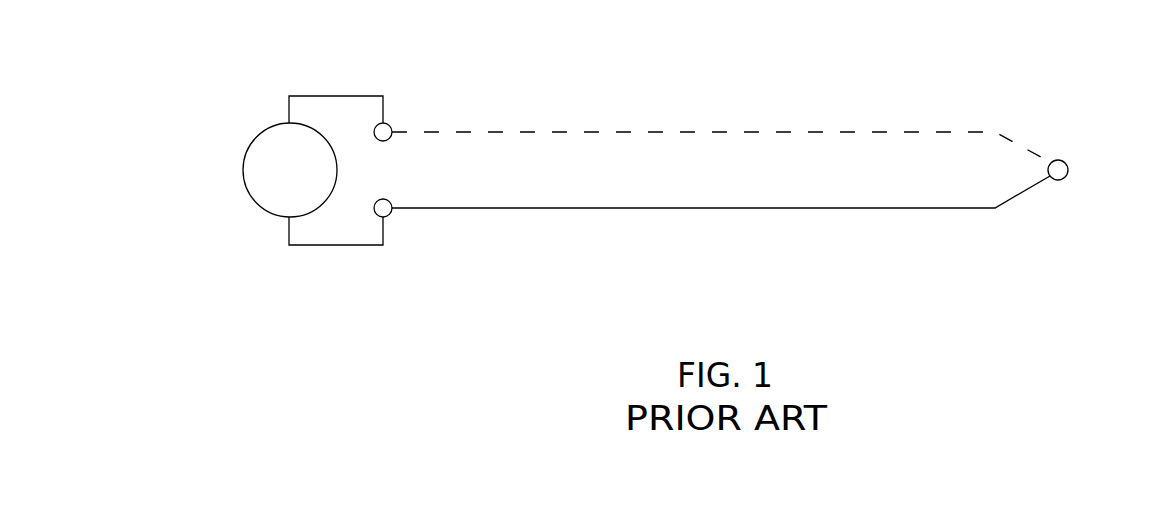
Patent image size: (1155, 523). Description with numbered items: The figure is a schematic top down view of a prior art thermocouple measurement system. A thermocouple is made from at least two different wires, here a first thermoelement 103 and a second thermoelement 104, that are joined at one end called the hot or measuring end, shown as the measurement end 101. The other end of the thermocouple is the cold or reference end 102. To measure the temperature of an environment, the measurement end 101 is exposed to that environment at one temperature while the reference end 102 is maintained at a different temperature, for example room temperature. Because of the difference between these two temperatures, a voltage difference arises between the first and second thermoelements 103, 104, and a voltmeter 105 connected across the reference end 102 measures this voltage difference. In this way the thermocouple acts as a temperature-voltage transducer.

The measurement end 101 is at (1086, 144).
The reference end 102 is at (400, 147).
The first thermoelement 103 is at (591, 123).
The second thermoelement 104 is at (591, 219).
The voltmeter 105 is at (248, 123).